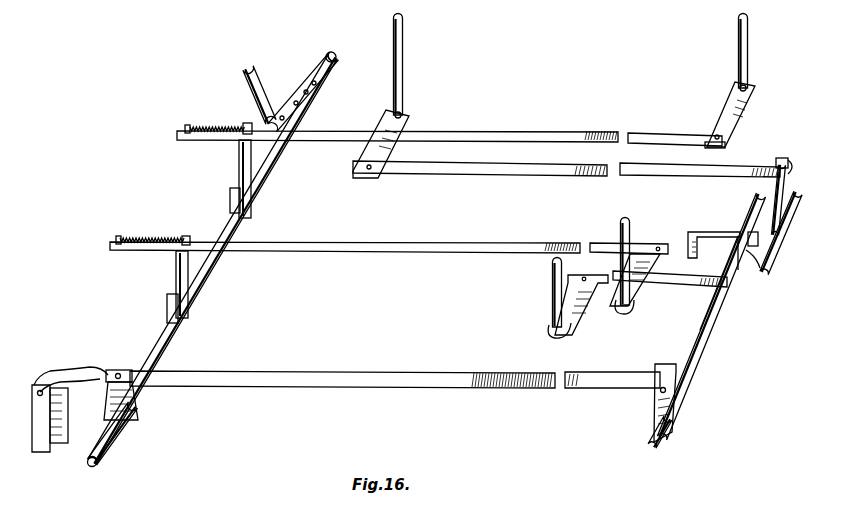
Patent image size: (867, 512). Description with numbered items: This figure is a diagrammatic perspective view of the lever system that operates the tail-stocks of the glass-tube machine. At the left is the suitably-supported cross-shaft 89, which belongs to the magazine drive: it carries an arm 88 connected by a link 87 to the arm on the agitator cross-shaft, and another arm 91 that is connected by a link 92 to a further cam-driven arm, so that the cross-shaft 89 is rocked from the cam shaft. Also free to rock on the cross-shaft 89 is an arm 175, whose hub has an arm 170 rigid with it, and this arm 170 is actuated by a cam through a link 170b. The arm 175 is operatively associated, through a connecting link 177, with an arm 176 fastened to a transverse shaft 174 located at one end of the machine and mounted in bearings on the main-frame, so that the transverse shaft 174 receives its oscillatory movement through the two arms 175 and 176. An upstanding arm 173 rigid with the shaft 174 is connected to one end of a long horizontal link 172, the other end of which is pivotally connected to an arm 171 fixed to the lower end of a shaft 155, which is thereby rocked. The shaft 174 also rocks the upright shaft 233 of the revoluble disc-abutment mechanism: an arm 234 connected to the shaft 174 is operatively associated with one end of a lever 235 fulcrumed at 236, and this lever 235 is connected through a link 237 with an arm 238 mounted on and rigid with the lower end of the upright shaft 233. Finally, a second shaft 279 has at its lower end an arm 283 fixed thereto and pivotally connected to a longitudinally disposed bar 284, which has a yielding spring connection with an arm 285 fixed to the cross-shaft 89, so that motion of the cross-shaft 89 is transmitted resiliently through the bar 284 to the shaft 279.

The link 87 is at (248, 88).
The arm 88 is at (294, 94).
The cross-shaft 89 is at (214, 262).
The arm 91 is at (84, 370).
The link 92 is at (38, 452).
The shaft 155 is at (403, 60).
The arm 170 is at (106, 377).
The link 170b is at (90, 444).
The arm 171 is at (372, 154).
The long horizontal link 172 is at (474, 166).
The upstanding arm 173 is at (792, 160).
The transverse shaft 174 is at (706, 358).
The arm 175 is at (138, 406).
The arm 176 is at (656, 424).
The connecting link 177 is at (358, 372).
The upright shaft 233 is at (552, 288).
The arm 234 is at (766, 262).
The lever 235 is at (734, 261).
The fulcrum 236 is at (736, 296).
The link 237 is at (687, 261).
The arm 238 is at (580, 318).
The shaft 279 is at (739, 56).
The arm 283 is at (727, 116).
The longitudinally disposed bar 284 is at (462, 134).
The arm 285 is at (252, 164).